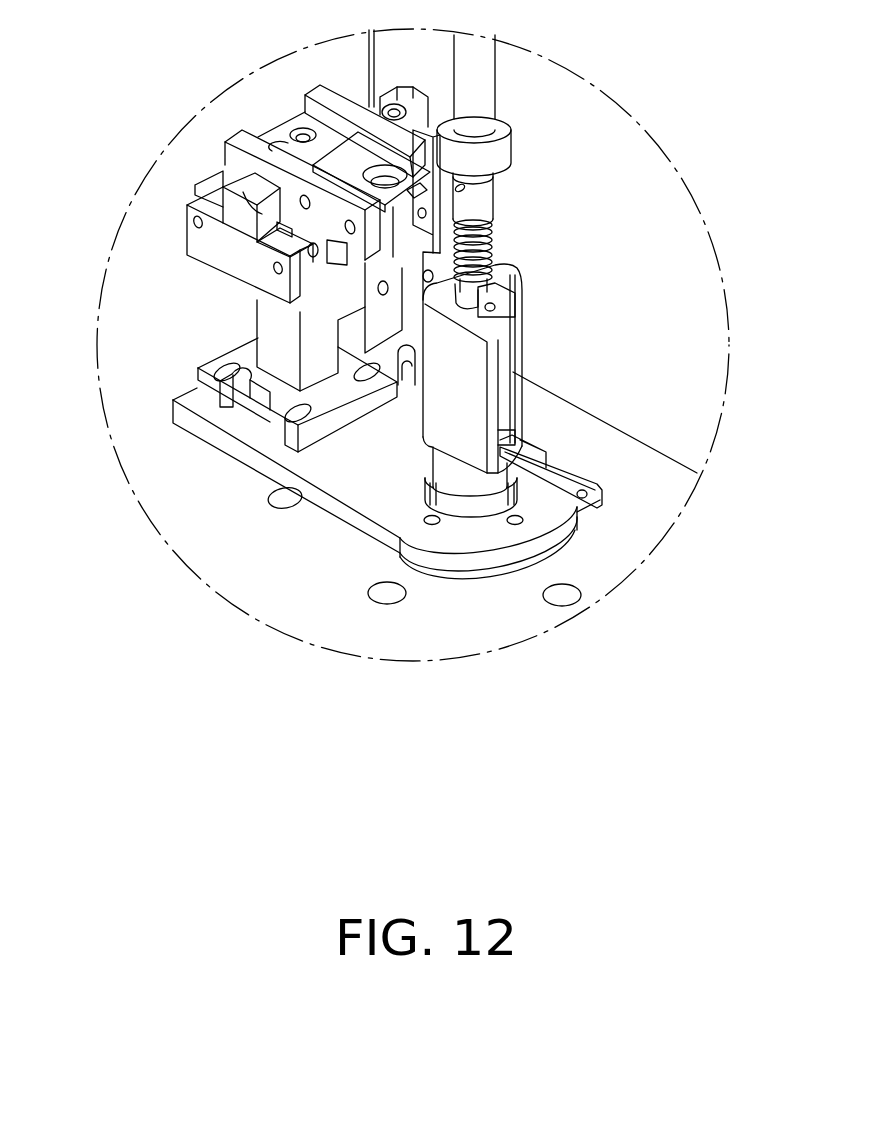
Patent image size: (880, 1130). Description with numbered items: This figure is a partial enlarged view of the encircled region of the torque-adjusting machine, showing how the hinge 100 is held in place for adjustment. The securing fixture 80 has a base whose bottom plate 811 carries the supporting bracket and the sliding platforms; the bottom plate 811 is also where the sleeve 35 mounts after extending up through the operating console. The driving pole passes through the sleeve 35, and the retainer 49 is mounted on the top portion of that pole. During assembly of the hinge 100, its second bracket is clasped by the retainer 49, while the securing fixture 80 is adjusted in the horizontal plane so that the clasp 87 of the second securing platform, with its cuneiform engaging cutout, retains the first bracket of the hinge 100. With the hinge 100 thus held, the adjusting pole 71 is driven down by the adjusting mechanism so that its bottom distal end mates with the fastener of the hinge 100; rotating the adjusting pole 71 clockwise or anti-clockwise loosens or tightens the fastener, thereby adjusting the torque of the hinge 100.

The sleeve 35 is at (485, 578).
The retainer 49 is at (468, 365).
The adjusting pole 71 is at (477, 89).
The securing fixture 80 is at (230, 230).
The clasp 87 is at (345, 158).
The hinge 100 is at (600, 503).
The bottom plate 811 is at (367, 487).